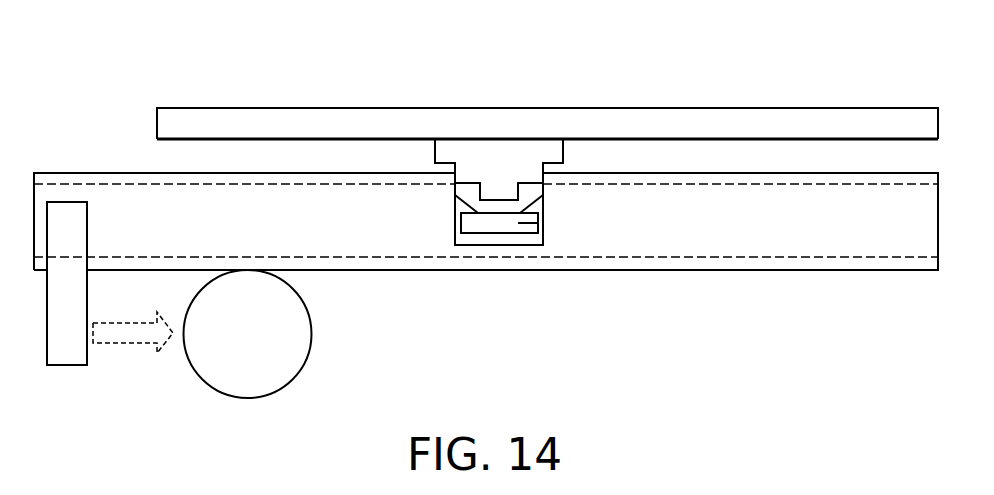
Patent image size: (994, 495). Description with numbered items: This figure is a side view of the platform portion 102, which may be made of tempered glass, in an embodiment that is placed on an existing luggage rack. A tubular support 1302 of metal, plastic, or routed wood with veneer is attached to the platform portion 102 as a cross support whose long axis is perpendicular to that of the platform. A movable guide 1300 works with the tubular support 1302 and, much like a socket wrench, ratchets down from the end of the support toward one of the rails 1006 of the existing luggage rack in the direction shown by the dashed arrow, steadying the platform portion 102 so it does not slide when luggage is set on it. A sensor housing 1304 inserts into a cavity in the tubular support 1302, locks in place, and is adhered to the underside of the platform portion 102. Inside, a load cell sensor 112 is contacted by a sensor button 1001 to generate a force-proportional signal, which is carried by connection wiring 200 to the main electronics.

The platform portion 102 is at (210, 108).
The sensor button 1001 is at (497, 193).
The tubular support 1302 is at (852, 178).
The sensor housing 1304 is at (594, 140).
The load cell sensor 112 is at (477, 225).
The connection wiring 200 is at (535, 229).
The movable guide 1300 is at (73, 344).
The rail 1006 is at (280, 343).